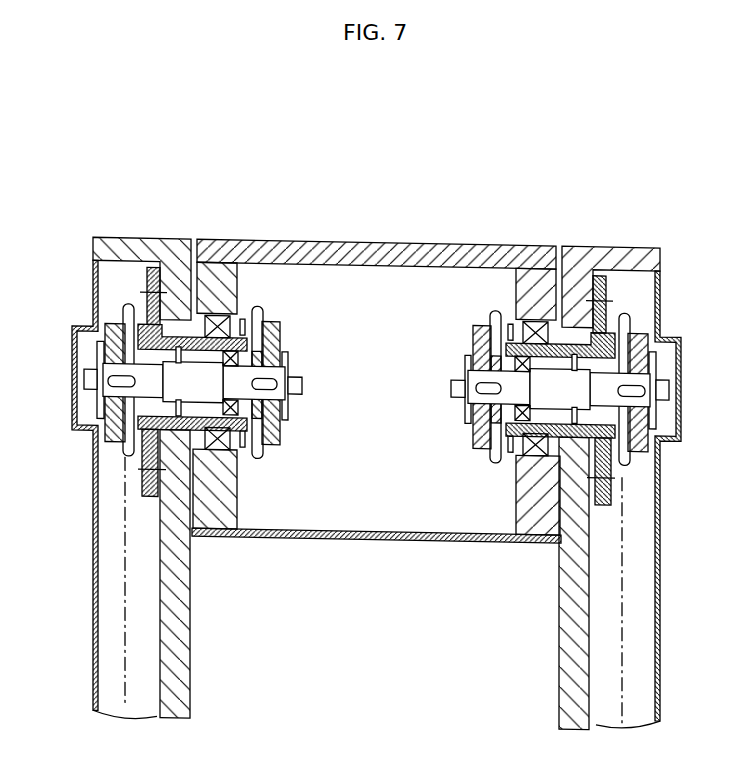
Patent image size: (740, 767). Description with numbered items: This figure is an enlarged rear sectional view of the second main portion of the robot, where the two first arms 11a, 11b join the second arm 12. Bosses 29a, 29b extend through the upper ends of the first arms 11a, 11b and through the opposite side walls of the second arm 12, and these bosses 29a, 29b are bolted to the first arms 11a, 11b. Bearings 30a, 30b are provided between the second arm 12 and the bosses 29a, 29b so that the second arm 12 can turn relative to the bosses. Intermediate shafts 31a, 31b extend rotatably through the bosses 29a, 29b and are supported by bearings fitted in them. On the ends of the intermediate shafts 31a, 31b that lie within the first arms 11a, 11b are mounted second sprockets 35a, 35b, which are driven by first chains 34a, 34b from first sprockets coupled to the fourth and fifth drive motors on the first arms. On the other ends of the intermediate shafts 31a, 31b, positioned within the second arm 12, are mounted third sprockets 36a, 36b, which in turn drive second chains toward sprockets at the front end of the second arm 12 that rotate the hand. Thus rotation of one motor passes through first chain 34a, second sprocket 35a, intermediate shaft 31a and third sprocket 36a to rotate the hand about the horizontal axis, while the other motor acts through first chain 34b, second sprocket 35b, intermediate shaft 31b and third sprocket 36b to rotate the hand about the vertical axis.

The second arm 12 is at (372, 247).
The first arm 11a is at (572, 670).
The first arm 11b is at (178, 682).
The boss 29a is at (573, 328).
The boss 29b is at (180, 330).
The bearing 30a is at (530, 440).
The bearing 30b is at (215, 442).
The intermediate shaft 31a is at (577, 397).
The intermediate shaft 31b is at (212, 397).
The first chain 34a is at (622, 607).
The first chain 34b is at (127, 609).
The second sprocket 35a is at (627, 455).
The second sprocket 35b is at (123, 459).
The third sprocket 36a is at (490, 454).
The third sprocket 36b is at (260, 459).